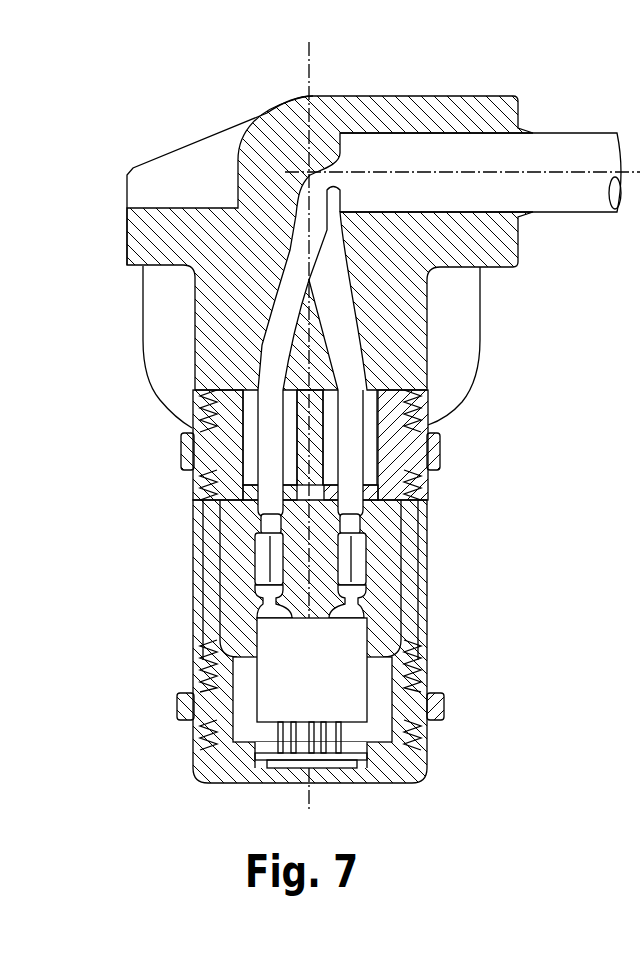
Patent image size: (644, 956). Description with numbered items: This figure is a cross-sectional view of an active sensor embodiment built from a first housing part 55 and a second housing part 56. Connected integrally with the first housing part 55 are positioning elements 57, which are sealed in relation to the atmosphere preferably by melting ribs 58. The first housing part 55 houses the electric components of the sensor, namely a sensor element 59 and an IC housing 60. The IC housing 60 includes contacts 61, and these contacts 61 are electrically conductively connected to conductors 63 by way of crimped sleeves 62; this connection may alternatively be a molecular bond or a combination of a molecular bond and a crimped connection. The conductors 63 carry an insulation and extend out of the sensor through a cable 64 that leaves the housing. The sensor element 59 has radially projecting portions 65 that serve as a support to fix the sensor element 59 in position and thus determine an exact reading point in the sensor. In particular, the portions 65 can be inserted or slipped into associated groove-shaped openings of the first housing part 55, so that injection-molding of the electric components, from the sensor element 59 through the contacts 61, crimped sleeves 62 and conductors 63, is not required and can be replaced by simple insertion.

The first housing part 55 is at (420, 588).
The second housing part 56 is at (423, 507).
The positioning elements 57 is at (186, 455).
The melting ribs 58 is at (222, 405).
The sensor element 59 is at (323, 763).
The IC housing 60 is at (337, 660).
The contacts 61 is at (350, 612).
The crimped sleeves 62 is at (360, 553).
The conductors 63 is at (353, 522).
The cable 64 is at (545, 150).
The radially projecting portions 65 is at (380, 766).